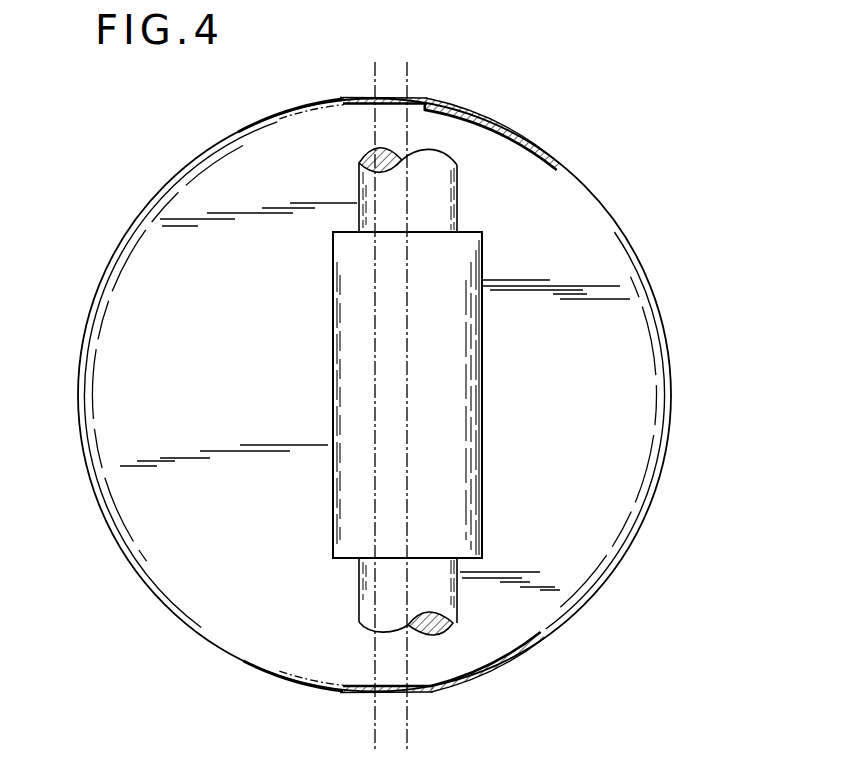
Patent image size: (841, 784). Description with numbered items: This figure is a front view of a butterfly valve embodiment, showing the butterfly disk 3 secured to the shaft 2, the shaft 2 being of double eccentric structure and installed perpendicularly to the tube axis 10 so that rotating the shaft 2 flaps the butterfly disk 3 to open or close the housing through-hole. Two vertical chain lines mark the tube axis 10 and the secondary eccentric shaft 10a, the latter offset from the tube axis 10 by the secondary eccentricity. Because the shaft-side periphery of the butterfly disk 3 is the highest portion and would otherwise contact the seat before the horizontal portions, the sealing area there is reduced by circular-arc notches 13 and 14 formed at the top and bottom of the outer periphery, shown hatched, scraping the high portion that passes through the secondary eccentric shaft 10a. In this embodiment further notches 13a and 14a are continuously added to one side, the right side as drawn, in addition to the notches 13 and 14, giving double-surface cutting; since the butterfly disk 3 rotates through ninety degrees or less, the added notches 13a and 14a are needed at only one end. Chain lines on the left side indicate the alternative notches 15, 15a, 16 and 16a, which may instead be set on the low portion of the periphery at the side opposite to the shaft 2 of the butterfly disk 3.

The shaft 2 is at (443, 190).
The butterfly disk 3 is at (612, 233).
The tube axis 10 is at (372, 67).
The secondary eccentric shaft 10a is at (412, 67).
The notch 13 is at (393, 98).
The notch 13a is at (490, 122).
The notch 14 is at (367, 693).
The notch 14a is at (483, 670).
The notch 15 is at (360, 105).
The notch 15a is at (308, 111).
The notch 16 is at (363, 684).
The notch 16a is at (278, 668).